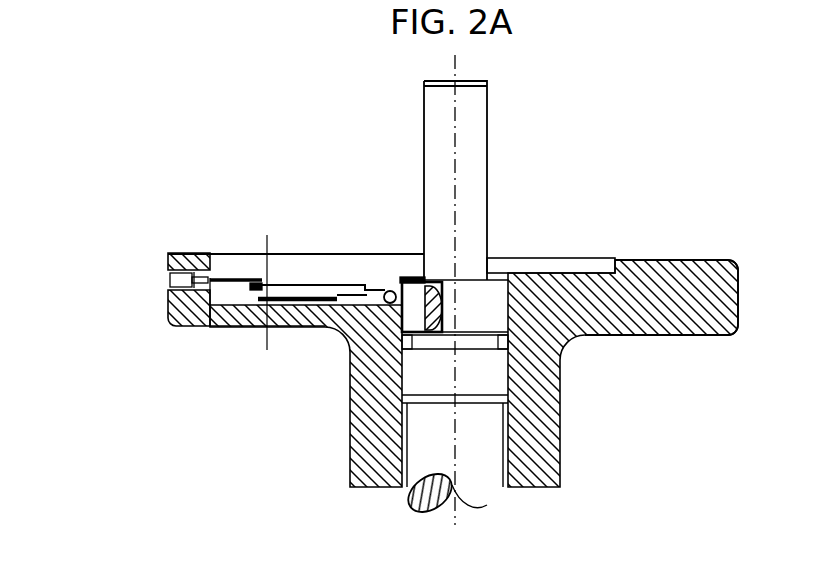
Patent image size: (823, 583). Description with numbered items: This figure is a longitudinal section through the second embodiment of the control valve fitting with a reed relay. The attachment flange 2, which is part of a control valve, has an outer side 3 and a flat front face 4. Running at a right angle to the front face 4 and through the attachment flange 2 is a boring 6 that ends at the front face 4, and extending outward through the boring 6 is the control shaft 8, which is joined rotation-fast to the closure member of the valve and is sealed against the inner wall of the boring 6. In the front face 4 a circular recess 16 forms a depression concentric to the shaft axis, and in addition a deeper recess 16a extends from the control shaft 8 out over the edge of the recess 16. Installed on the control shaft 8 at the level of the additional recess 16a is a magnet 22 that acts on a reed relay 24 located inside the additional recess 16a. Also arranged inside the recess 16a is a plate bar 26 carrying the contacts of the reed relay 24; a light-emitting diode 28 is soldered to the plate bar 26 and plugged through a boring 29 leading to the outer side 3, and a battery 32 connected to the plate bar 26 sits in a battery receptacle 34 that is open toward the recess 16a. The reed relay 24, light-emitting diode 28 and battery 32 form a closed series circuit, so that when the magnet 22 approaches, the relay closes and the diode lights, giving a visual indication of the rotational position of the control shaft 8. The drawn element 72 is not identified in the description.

The attachment flange 2 is at (725, 316).
The outer side 3 is at (168, 315).
The front face 4 is at (707, 260).
The boring 6 is at (405, 482).
The control shaft 8 is at (487, 487).
The recess 16 is at (555, 263).
The additional recess 16a is at (236, 270).
The magnet 22 is at (413, 273).
The reed relay 24 is at (389, 289).
The plate bar 26 is at (277, 287).
The light-emitting diode 28 is at (168, 280).
The boring 29 is at (167, 290).
The battery 32 is at (285, 327).
The battery receptacle 34 is at (227, 326).
The rod 72 is at (472, 143).